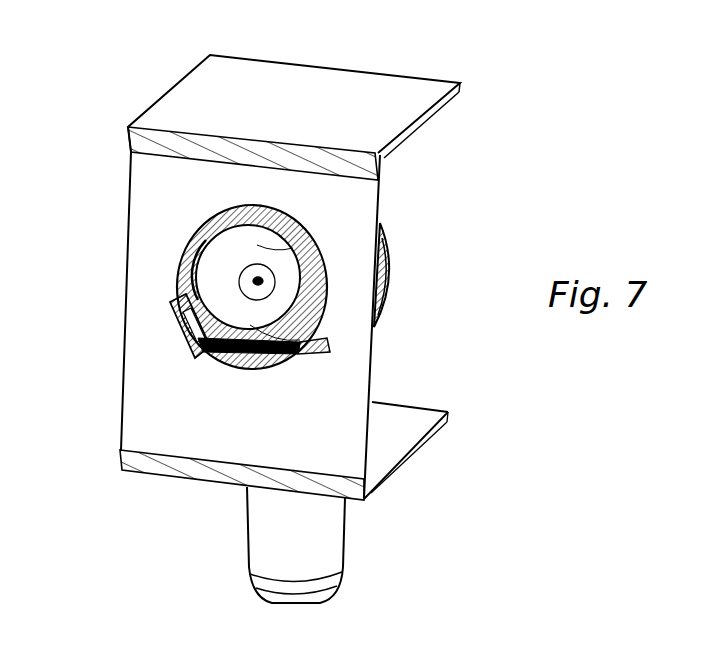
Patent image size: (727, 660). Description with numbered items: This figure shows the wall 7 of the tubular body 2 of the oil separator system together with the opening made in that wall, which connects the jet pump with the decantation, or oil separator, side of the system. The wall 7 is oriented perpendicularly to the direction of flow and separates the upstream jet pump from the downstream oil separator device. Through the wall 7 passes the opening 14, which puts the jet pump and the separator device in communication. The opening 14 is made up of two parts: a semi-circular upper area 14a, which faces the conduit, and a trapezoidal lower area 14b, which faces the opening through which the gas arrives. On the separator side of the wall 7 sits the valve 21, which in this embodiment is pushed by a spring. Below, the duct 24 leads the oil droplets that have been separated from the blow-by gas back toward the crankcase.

The tubular body 2 is at (325, 95).
The wall 7 is at (152, 421).
The opening 14 is at (310, 240).
The semi-circular upper area 14a is at (207, 273).
The trapezoidal lower area 14b is at (205, 340).
The valve 21 is at (327, 338).
The duct 24 is at (315, 547).